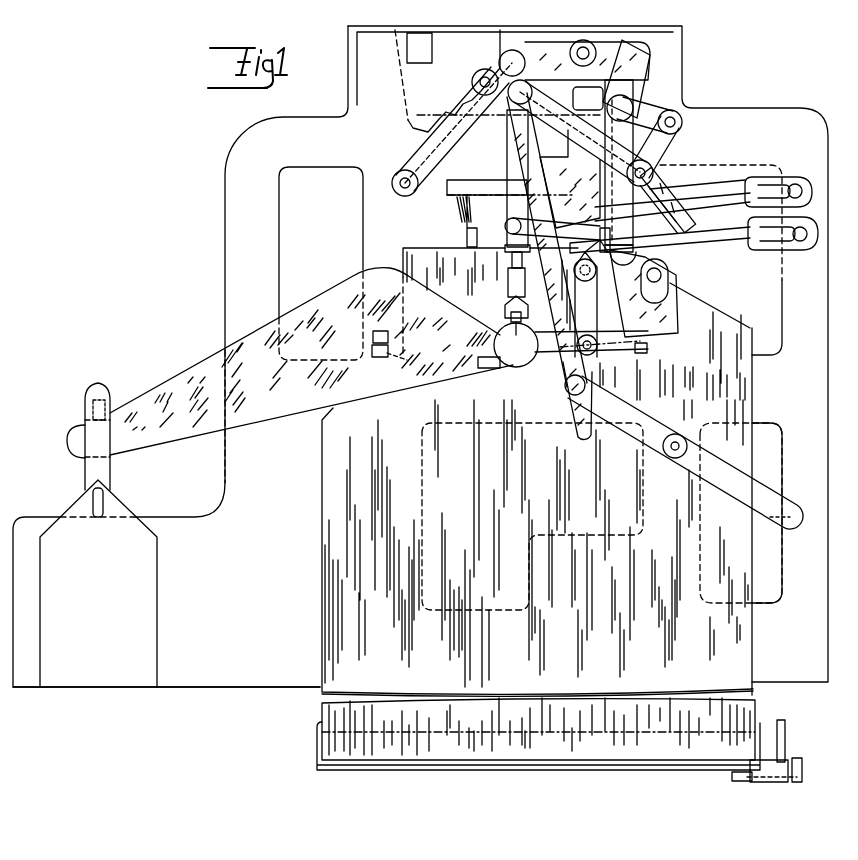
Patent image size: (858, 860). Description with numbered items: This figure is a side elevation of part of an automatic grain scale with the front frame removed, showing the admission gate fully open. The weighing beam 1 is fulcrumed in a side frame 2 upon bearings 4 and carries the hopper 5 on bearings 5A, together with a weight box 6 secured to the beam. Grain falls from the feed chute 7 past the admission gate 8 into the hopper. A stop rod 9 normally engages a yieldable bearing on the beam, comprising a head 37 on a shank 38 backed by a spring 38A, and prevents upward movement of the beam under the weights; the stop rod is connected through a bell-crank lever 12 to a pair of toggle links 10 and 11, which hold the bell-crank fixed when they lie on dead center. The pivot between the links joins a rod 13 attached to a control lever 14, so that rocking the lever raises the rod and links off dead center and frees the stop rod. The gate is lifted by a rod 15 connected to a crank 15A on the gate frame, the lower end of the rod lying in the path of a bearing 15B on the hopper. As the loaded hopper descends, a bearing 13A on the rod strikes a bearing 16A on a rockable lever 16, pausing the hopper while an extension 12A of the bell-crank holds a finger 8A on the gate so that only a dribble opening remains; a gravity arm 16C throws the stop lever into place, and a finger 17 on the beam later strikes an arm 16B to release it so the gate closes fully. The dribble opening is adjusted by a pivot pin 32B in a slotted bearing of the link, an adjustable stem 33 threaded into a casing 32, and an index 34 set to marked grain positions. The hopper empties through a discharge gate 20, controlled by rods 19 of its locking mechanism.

The weighing beam 1 is at (292, 412).
The side frame 2 is at (243, 672).
The bearings 4 is at (372, 358).
The hopper 5 is at (752, 643).
The bearings 5A is at (527, 350).
The weight box 6 is at (98, 583).
The feed chute 7 is at (420, 90).
The admission gate 8 is at (570, 179).
The finger 8A is at (590, 52).
The stop rod 9 is at (619, 162).
The toggle link 10 is at (580, 132).
The toggle link 11 is at (452, 129).
The bell-crank lever 12 is at (644, 136).
The extension 12A is at (587, 102).
The rod 13 is at (547, 240).
The bearing 13A is at (574, 227).
The control lever 14 is at (636, 420).
The rod 15 is at (517, 181).
The crank 15A is at (499, 64).
The bearing 15B is at (508, 262).
The rockable lever 16 is at (586, 304).
The bearing 16A is at (598, 240).
The arm 16B is at (617, 353).
The gravity arm 16C is at (530, 362).
The finger 17 is at (668, 276).
The rods 19 is at (787, 722).
The discharge gate 20 is at (681, 770).
The casing 32 is at (703, 195).
The pivot pin 32B is at (660, 162).
The adjustable stem 33 is at (697, 174).
The index 34 is at (693, 218).
The head 37 is at (637, 257).
The shank 38 is at (637, 312).
The spring 38A is at (700, 328).